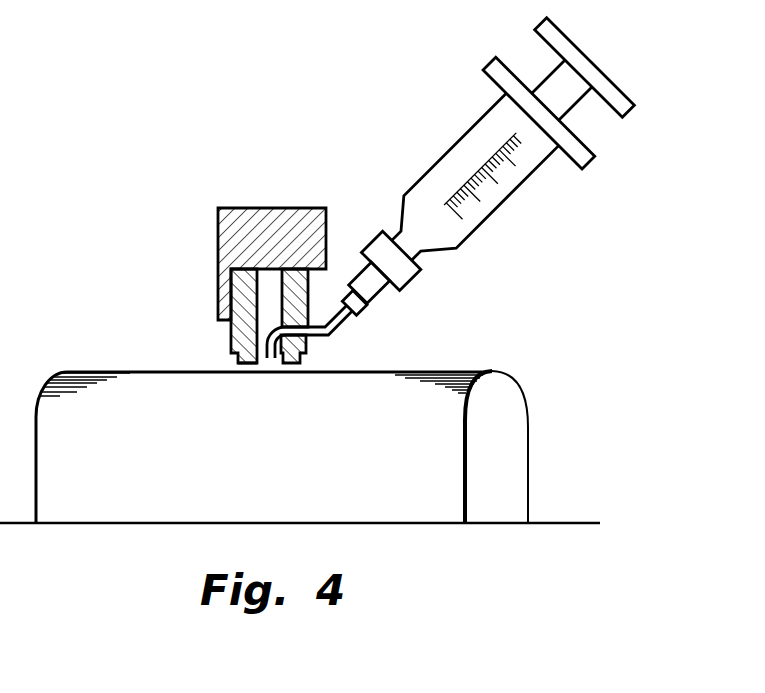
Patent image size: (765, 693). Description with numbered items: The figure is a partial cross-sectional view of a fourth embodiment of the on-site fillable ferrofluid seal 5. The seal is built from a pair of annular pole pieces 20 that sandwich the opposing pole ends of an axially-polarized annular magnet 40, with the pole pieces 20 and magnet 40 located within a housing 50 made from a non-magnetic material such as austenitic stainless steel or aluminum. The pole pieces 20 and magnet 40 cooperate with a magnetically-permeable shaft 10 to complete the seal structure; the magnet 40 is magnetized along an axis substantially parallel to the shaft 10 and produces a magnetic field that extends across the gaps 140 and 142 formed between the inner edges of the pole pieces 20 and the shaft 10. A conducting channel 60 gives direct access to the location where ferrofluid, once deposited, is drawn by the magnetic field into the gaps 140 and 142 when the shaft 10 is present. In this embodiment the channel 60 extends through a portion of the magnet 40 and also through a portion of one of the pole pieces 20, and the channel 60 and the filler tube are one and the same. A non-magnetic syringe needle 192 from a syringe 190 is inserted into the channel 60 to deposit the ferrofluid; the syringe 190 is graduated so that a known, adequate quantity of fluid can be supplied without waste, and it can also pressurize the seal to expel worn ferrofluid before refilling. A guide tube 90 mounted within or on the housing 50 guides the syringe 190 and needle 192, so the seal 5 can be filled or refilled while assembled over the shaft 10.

The fillable ferrofluid seal 5 is at (100, 182).
The shaft 10 is at (453, 433).
The pole pieces 20 is at (248, 288).
The magnet 40 is at (218, 317).
The housing 50 is at (256, 216).
The conducting channel 60 is at (310, 307).
The guide tube 90 is at (362, 314).
The gap 140 is at (245, 366).
The gap 142 is at (290, 366).
The syringe 190 is at (518, 180).
The syringe needle 192 is at (332, 334).